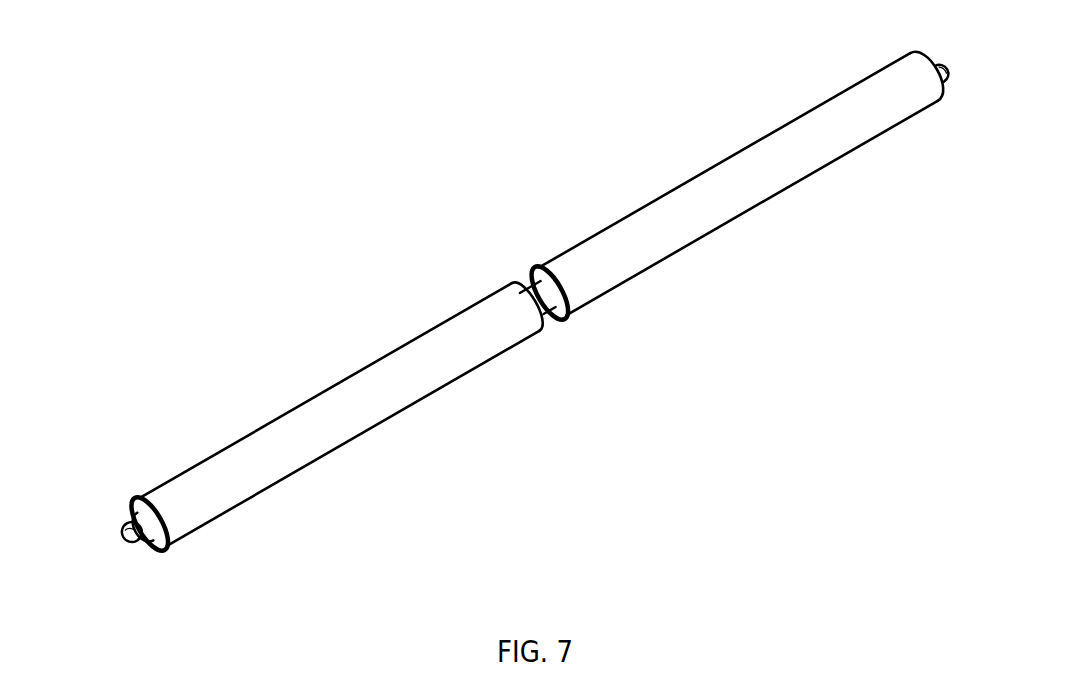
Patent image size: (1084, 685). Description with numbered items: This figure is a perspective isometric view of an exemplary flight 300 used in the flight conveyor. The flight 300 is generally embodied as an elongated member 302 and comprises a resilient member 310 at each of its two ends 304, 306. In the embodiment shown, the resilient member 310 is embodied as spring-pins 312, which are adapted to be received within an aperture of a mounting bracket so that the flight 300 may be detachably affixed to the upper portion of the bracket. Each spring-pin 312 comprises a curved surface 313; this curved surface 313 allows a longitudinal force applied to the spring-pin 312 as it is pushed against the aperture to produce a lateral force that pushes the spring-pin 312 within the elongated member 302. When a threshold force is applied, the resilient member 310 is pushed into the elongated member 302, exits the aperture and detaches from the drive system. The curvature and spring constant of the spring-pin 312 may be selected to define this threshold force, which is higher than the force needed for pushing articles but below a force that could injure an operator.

The flight 300 is at (677, 212).
The elongated member 302 is at (385, 388).
The end 304 is at (173, 522).
The end 306 is at (907, 82).
The resilient member 310 is at (101, 528).
The spring-pin 312 is at (142, 542).
The curved surface 313 is at (123, 542).